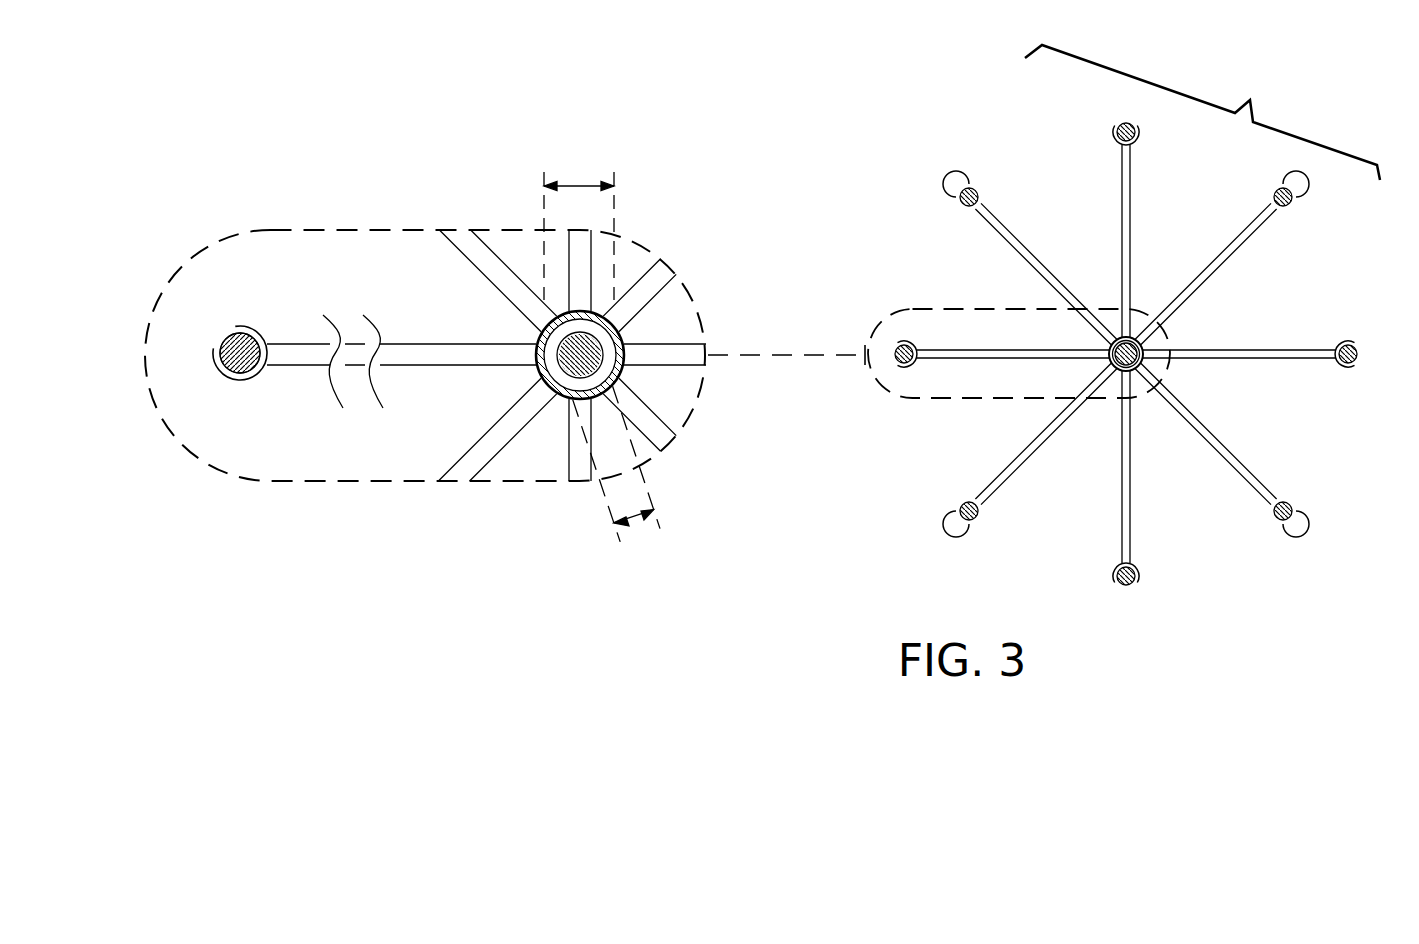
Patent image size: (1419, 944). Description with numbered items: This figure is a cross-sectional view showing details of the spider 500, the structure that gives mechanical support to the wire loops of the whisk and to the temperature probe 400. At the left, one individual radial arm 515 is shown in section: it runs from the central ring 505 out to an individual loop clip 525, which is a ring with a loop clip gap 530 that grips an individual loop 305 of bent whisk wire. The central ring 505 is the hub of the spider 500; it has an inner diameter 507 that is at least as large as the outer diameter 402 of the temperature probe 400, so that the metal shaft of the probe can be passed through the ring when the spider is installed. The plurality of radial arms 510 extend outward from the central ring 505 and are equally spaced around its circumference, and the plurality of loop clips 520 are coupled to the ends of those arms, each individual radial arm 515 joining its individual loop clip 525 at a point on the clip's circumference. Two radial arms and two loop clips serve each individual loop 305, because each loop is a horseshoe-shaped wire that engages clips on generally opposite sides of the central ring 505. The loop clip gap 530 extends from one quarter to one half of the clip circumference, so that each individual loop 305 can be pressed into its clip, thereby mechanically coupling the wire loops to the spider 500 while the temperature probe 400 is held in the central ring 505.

The individual loop 305 is at (232, 362).
The temperature probe 400 is at (567, 370).
The outer diameter of the temperature probe 402 is at (634, 516).
The spider 500 is at (1127, 324).
The central ring 505 is at (625, 347).
The inner diameter of the central ring 507 is at (580, 186).
The plurality of radial arms 510 is at (1125, 533).
The individual radial arm 515 is at (298, 367).
The plurality of loop clips 520 is at (1137, 578).
The individual loop clip 525 is at (246, 327).
The loop clip gap 530 is at (213, 352).